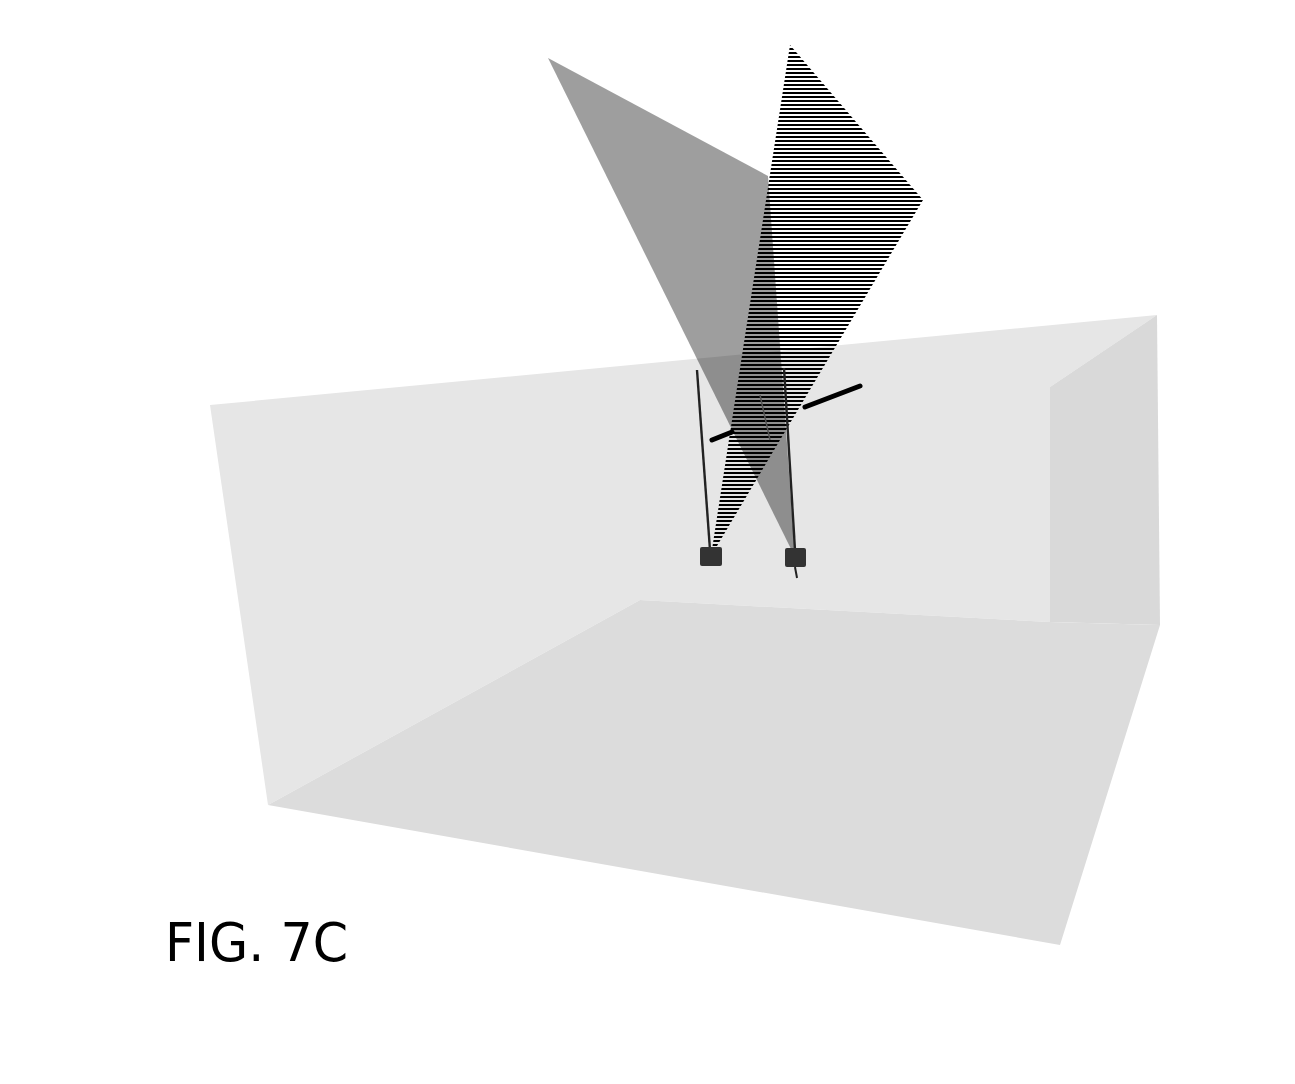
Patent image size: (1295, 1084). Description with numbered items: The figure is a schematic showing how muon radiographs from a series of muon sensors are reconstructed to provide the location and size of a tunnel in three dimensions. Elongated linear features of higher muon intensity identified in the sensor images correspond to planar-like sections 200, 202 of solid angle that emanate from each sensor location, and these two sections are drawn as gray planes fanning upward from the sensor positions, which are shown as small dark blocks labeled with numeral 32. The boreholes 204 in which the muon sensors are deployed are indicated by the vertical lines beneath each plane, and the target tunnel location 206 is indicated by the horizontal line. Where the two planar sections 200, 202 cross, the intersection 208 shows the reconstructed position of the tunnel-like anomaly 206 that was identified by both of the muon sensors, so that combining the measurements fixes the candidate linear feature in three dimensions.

The planar-like section 200 is at (846, 148).
The planar-like section 202 is at (615, 132).
The borehole 204 is at (703, 487).
The target tunnel location 206 is at (853, 387).
The intersection 208 is at (775, 412).
The beacon / tracking device 32 is at (806, 558).